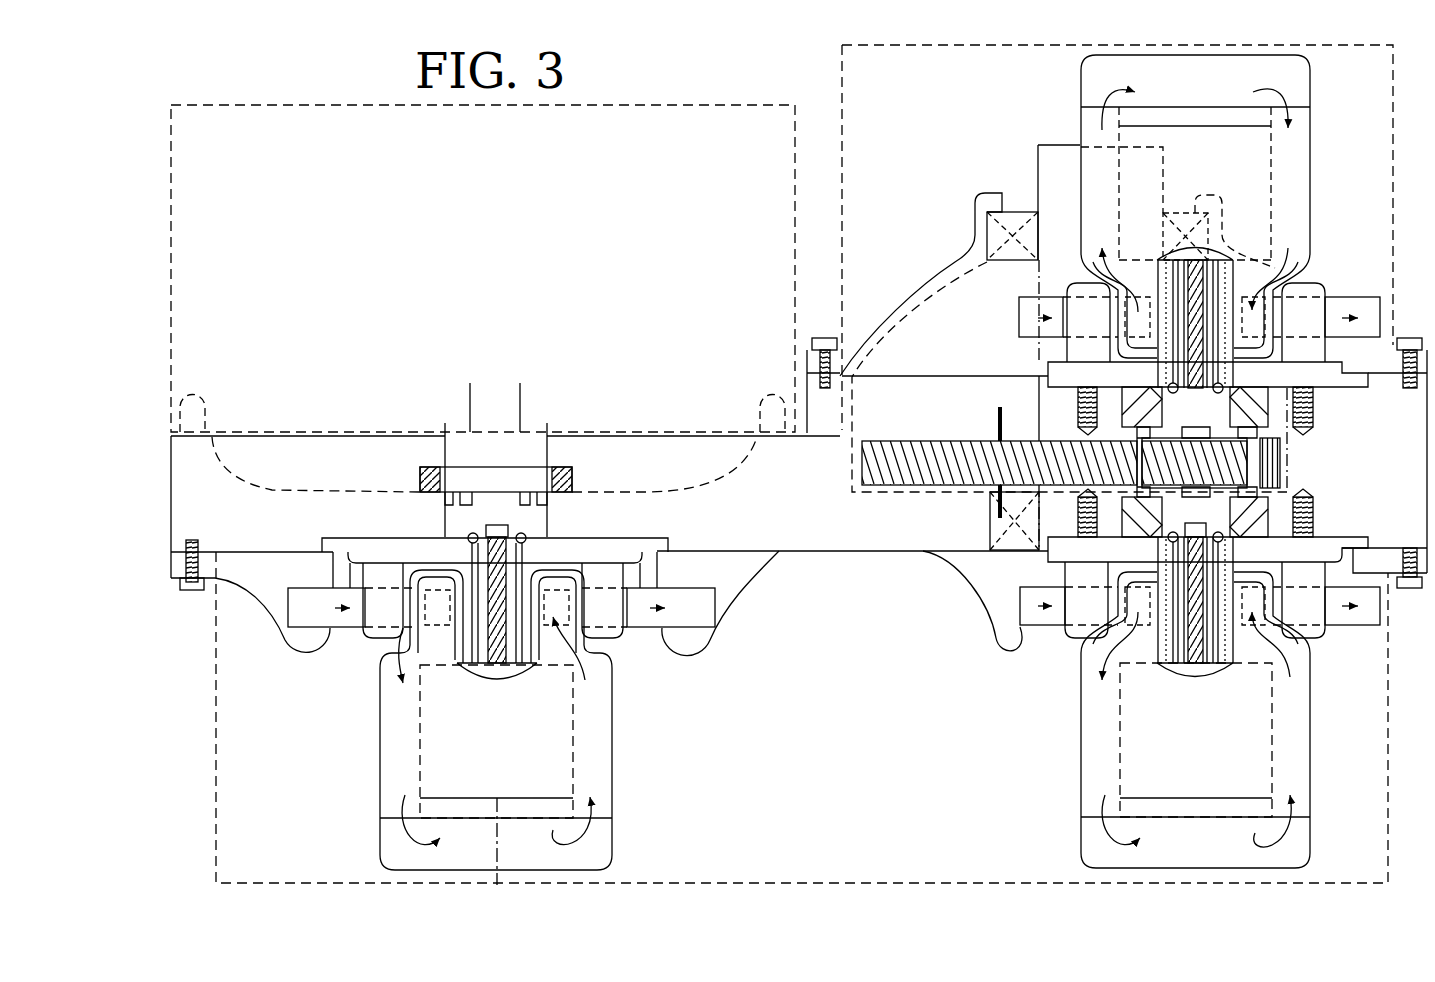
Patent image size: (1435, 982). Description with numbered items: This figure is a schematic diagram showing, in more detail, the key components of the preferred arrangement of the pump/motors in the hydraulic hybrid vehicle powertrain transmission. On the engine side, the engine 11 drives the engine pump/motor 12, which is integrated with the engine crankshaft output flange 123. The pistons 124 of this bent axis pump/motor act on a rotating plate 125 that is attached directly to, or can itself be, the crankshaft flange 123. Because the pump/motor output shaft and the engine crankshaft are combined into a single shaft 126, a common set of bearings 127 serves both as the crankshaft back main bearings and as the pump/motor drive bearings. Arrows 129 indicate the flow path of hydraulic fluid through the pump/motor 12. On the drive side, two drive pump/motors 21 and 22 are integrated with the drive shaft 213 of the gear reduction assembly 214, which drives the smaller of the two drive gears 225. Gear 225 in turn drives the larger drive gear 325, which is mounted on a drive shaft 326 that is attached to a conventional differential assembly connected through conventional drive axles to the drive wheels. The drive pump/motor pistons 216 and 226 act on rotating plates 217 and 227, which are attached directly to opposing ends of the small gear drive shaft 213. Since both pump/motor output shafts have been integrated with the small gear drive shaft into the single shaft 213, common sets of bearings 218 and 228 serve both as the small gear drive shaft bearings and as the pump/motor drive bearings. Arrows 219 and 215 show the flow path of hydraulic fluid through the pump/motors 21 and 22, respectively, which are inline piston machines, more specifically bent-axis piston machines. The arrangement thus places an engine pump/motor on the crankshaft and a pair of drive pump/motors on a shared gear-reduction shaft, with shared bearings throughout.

The engine 11 is at (483, 298).
The engine pump/motor 12 is at (443, 722).
The drive pump/motor 21 is at (1258, 743).
The drive pump/motor 22 is at (1255, 152).
The engine crankshaft output flange 123 is at (530, 445).
The pistons 124 is at (520, 560).
The rotating plate 125 is at (545, 520).
The single shaft 126 is at (510, 410).
The common set of bearings 127 is at (572, 485).
The arrows 129 is at (380, 660).
The drive shaft 213 is at (1200, 435).
The gear reduction assembly 214 is at (1008, 552).
The arrows 215 is at (1093, 90).
The drive pump/motor pistons 216 is at (1220, 645).
The rotating plate 217 is at (1270, 527).
The common set of bearings 218 is at (1215, 512).
The arrows 219 is at (1088, 660).
The smaller drive gear 225 is at (1177, 450).
The drive pump/motor pistons 226 is at (1290, 335).
The rotating plate 227 is at (1217, 416).
The common set of bearings 228 is at (1210, 372).
The larger drive gear 325 is at (885, 490).
The drive shaft 326 is at (1037, 407).